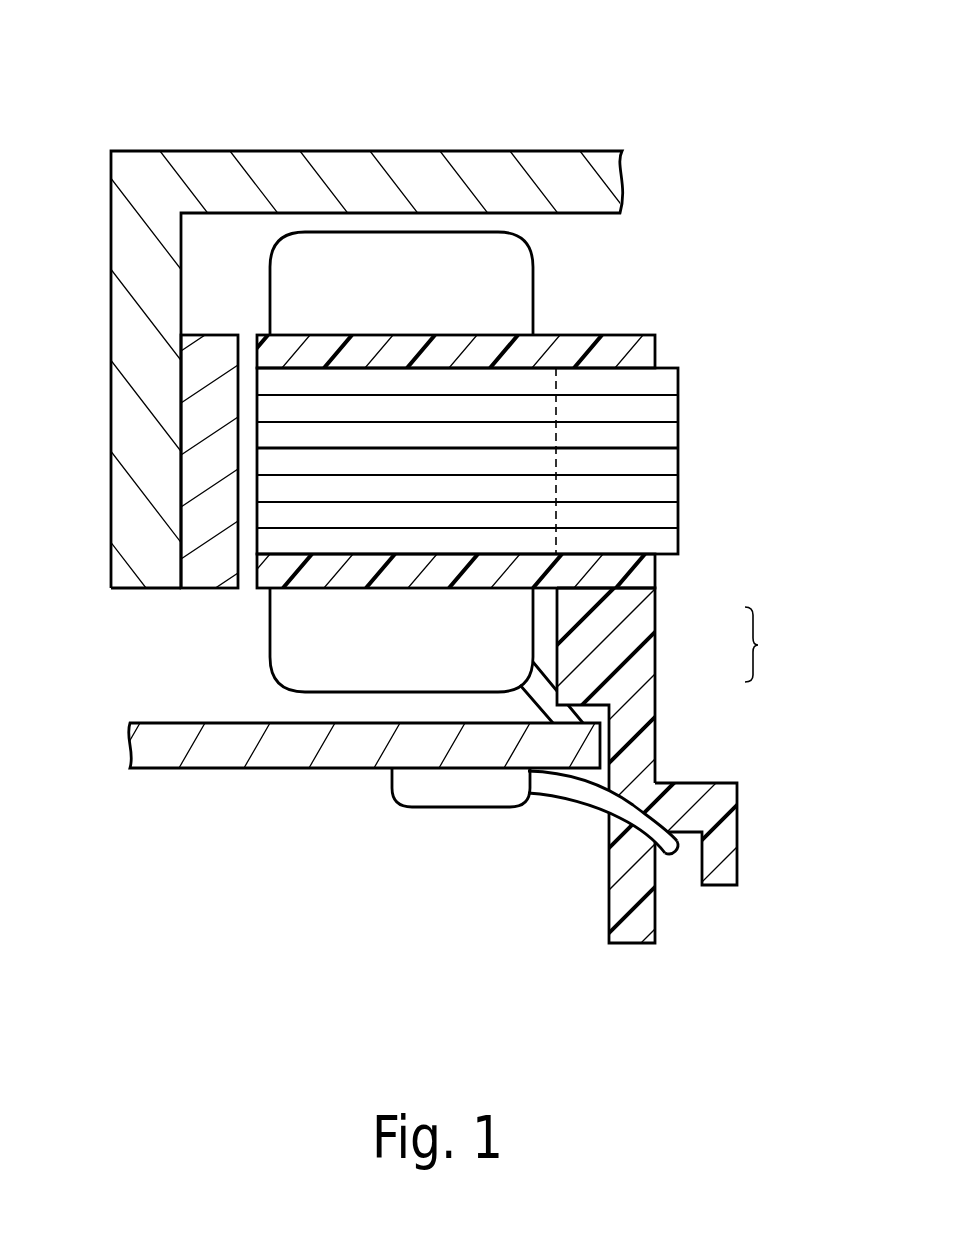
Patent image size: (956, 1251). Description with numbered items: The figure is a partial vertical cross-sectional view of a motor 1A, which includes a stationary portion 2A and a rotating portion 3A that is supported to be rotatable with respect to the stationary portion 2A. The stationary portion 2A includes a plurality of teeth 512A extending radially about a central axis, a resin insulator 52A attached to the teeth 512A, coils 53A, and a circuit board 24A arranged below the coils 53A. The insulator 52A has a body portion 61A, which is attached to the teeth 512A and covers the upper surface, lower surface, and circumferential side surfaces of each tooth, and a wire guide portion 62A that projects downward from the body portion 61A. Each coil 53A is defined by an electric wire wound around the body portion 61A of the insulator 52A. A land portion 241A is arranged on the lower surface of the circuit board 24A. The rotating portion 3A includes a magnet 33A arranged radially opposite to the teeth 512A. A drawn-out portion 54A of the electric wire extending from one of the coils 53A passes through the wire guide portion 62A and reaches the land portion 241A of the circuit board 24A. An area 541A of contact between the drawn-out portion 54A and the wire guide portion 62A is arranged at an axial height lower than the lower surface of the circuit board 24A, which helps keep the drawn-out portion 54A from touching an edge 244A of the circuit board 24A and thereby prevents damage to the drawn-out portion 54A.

The motor 1A is at (256, 84).
The stationary portion 2A is at (535, 523).
The rotating portion 3A is at (557, 125).
The magnet 33A is at (207, 467).
The teeth 512A is at (418, 437).
The coil 53A is at (326, 636).
The insulator 52A is at (598, 748).
The body portion 61A is at (493, 571).
The wire guide portion 62A is at (607, 751).
The drawn-out portion 54A is at (655, 826).
The area of contact 541A is at (655, 849).
The circuit board 24A is at (285, 752).
The land portion 241A is at (458, 772).
The edge 244A is at (631, 820).